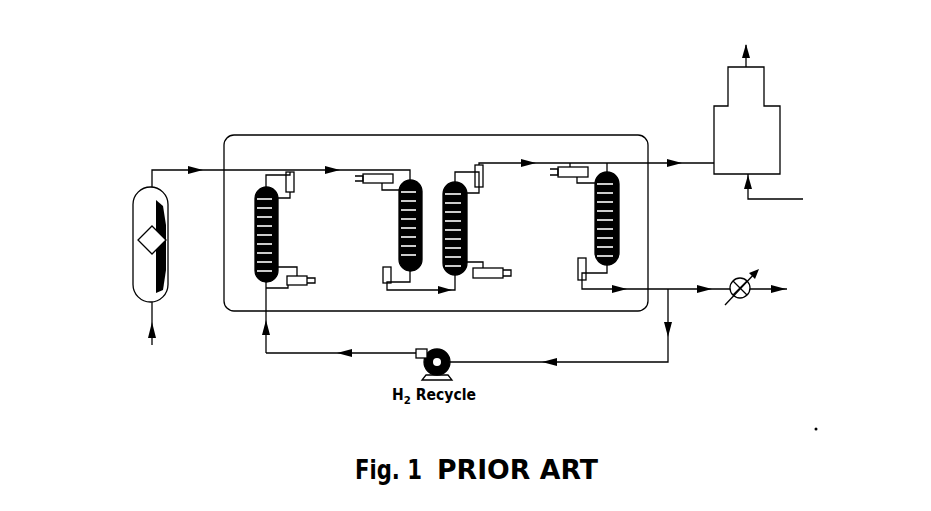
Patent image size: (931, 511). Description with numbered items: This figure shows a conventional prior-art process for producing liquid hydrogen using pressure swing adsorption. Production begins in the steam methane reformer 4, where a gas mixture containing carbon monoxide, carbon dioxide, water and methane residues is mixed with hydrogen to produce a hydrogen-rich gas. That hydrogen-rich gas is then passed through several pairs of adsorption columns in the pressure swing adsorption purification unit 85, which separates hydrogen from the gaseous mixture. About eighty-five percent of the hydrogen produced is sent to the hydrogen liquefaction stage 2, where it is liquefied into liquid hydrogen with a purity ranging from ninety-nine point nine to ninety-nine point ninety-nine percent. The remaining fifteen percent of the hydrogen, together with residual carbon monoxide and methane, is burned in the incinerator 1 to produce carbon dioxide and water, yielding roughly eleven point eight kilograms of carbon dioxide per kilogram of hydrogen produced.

The steam methane reformer (SMR) with CH4 feed 4 is at (133, 218).
The pressure swing adsorption (PSA) unit, 85% H2 recovery 85 is at (505, 230).
The H2 liquefaction heat exchanger 2 is at (744, 300).
The fired heater with CO2 exhaust 1 is at (725, 115).